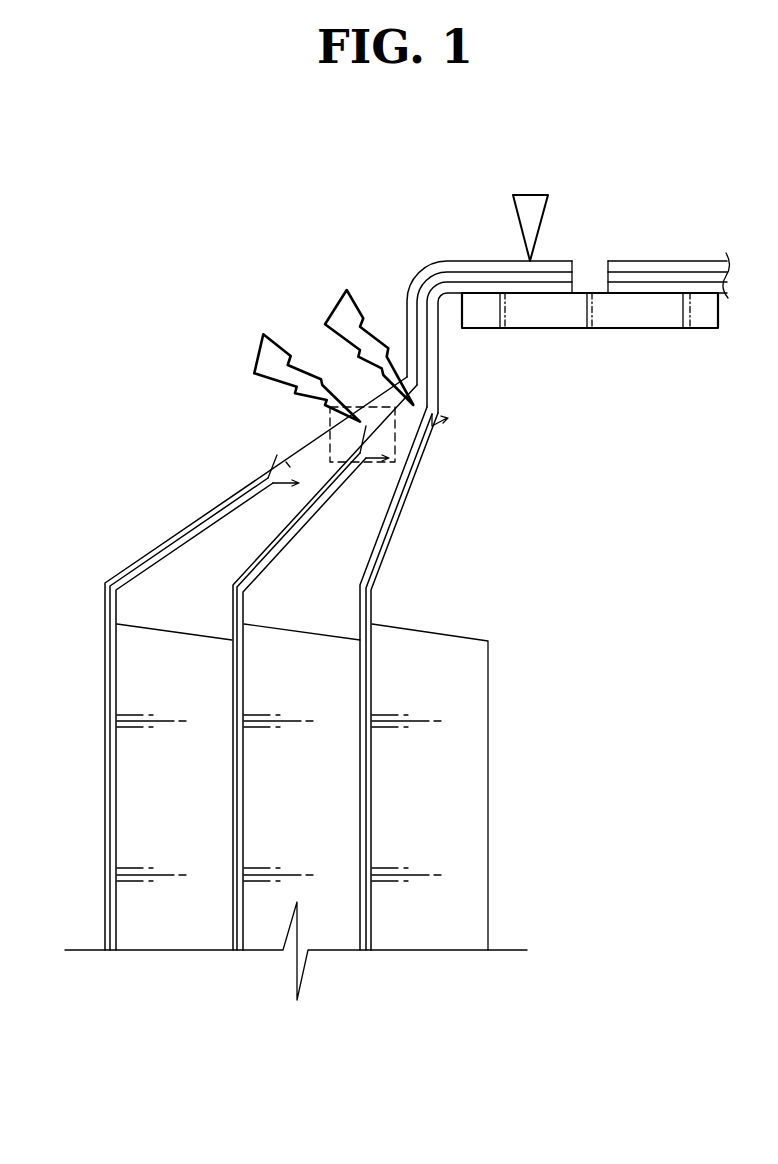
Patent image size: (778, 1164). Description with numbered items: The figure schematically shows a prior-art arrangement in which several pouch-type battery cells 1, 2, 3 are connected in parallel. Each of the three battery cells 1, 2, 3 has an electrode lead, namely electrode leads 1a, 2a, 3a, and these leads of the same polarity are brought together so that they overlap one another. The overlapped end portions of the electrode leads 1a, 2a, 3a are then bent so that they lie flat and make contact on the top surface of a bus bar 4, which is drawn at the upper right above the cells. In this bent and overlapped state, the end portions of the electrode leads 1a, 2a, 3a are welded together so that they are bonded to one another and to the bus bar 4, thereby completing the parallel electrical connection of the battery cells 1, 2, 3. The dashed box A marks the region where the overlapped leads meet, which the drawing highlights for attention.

The pouch-type battery cell 1 is at (168, 937).
The pouch-type battery cell 2 is at (332, 937).
The pouch-type battery cell 3 is at (423, 937).
The electrode lead 1a is at (482, 265).
The electrode lead 2a is at (550, 275).
The electrode lead 3a is at (532, 287).
The bus bar 4 is at (660, 317).
The region A is at (378, 465).